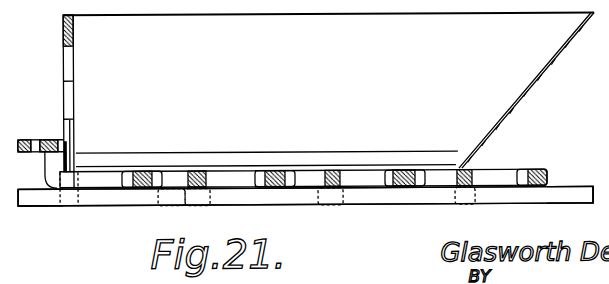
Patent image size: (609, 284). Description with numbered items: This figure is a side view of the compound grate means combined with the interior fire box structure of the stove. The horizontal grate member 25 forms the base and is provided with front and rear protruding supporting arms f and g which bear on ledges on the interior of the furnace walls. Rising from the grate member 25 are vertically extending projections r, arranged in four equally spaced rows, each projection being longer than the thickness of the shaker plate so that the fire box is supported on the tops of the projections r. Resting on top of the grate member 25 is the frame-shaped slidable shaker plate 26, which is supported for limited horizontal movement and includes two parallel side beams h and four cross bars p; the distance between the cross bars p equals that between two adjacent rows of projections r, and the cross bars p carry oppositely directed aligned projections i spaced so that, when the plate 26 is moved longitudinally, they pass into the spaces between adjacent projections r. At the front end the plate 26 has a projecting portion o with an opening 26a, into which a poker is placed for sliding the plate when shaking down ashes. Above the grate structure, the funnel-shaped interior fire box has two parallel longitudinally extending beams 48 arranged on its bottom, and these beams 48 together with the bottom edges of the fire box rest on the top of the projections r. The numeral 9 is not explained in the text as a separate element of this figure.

The opening 26a is at (37, 138).
The projecting portion o is at (70, 143).
The vertically extending projections r is at (73, 170).
The longitudinally extending beams 48 is at (138, 153).
The aligned projections i is at (259, 168).
The cross bars p is at (279, 170).
The slidable shaker plate 26 is at (538, 168).
The front supporting arm f is at (31, 198).
The base plate 9 is at (118, 205).
The horizontal grate member 25 is at (273, 207).
The side beams h is at (577, 197).
The rear supporting arm g is at (596, 191).